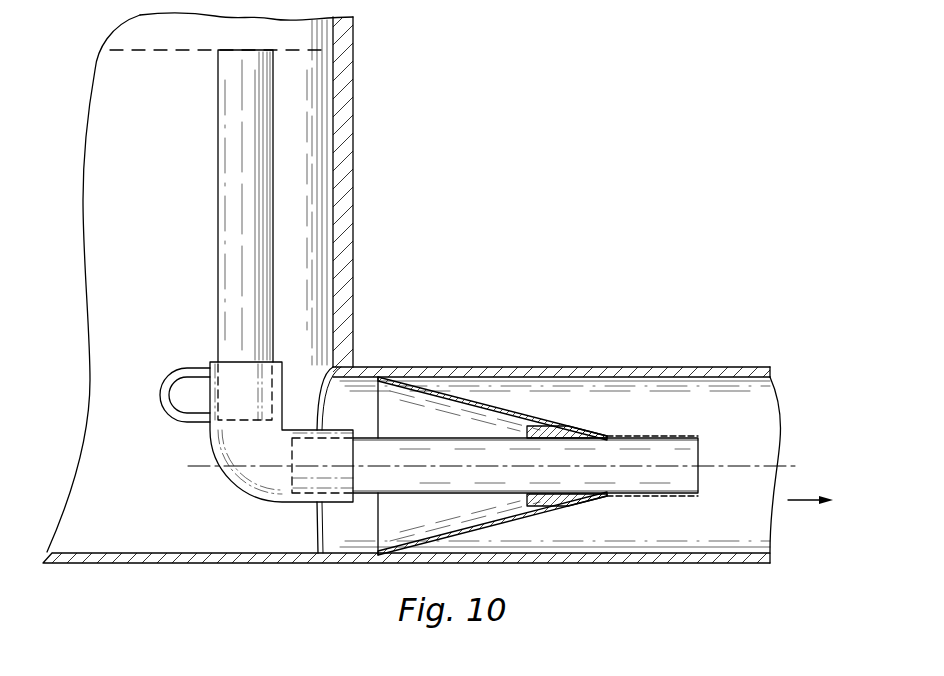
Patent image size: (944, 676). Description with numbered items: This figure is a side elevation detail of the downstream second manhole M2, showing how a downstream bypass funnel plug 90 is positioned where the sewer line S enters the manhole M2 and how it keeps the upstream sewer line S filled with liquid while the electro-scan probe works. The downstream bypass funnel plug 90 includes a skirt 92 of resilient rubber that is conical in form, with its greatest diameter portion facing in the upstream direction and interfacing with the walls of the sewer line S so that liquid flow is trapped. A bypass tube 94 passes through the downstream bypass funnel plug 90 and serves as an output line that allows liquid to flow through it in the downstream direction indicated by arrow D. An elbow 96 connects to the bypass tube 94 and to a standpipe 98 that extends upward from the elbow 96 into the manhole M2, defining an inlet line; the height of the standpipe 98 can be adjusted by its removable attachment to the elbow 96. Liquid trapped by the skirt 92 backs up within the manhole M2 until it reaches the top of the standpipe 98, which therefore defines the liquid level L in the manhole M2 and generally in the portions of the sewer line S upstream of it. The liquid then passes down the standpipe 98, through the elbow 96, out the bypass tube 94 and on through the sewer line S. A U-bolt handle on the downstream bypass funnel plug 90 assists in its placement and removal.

The downstream bypass funnel plug 90 is at (445, 280).
The skirt 92 is at (484, 404).
The bypass tube 94 is at (408, 485).
The elbow 96 is at (240, 483).
The standpipe 98 is at (230, 257).
The sewer line S is at (618, 367).
The liquid level L is at (170, 50).
The downstream second manhole M2 is at (169, 134).
The downstream direction arrow D is at (805, 503).